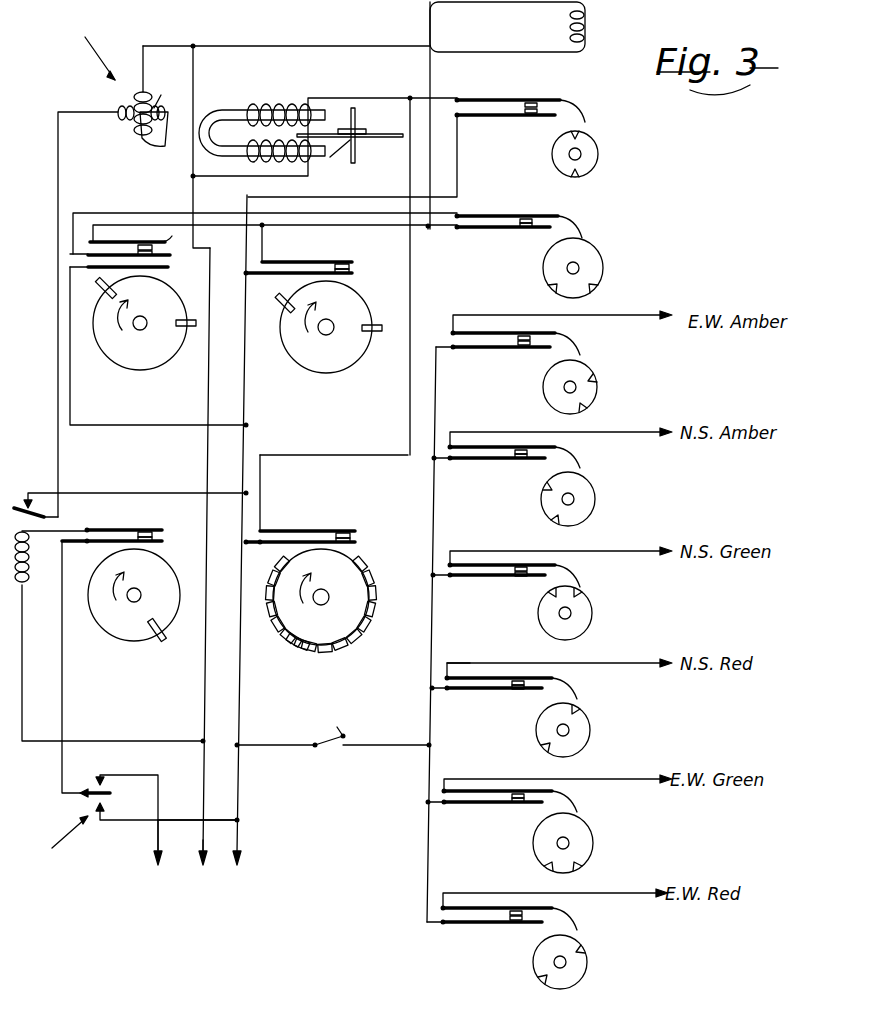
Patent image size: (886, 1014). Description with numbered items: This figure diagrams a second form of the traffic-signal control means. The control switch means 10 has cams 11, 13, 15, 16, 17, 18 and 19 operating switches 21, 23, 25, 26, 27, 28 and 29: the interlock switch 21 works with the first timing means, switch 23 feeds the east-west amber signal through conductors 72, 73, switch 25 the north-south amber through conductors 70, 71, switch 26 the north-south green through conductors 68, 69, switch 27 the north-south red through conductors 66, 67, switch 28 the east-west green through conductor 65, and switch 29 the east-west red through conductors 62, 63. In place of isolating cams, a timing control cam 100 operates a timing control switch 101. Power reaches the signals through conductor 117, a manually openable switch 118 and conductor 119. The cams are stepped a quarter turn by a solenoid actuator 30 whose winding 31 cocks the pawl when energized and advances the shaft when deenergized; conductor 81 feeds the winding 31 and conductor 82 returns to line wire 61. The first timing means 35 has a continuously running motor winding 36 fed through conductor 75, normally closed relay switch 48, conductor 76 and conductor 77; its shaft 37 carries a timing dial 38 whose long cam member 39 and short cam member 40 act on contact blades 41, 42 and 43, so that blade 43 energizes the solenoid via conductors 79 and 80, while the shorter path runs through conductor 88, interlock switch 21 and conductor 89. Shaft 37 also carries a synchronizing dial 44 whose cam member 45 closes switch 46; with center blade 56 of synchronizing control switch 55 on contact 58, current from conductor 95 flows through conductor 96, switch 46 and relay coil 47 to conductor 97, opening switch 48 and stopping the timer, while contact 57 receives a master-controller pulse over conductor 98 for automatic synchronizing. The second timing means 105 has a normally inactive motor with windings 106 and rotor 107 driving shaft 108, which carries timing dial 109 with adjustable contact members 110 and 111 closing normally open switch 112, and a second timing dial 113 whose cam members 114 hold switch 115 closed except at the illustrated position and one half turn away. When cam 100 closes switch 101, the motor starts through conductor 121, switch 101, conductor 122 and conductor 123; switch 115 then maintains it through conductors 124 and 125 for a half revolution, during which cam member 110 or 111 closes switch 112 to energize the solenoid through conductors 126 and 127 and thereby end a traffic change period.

The control switch means 10 is at (601, 153).
The cam 11 is at (580, 255).
The cam 13 is at (585, 378).
The cam 15 is at (585, 489).
The cam 16 is at (587, 620).
The cam 17 is at (580, 734).
The cam 18 is at (580, 835).
The cam 19 is at (582, 966).
The interlock switch 21 is at (552, 212).
The switch 23 is at (552, 333).
The switch 25 is at (554, 452).
The switch 26 is at (554, 569).
The switch 27 is at (542, 683).
The switch 28 is at (555, 796).
The switch 29 is at (555, 912).
The solenoid actuator 30 is at (599, 36).
The solenoid winding 31 is at (570, 38).
The first timing means 35 is at (87, 46).
The motor windings 36 is at (145, 107).
The shaft 37 is at (137, 332).
The timing dial 38 is at (151, 362).
The cam member 39 is at (95, 291).
The cam member 40 is at (193, 328).
The contact blade 41 is at (168, 269).
The contact blade 42 is at (170, 257).
The contact blade 43 is at (160, 240).
The synchronizing dial 44 is at (158, 674).
The cam member 45 is at (166, 646).
The synchronizing switch 46 is at (158, 529).
The relay coil 47 is at (30, 574).
The normally closed switch 48 is at (30, 494).
The synchronizing control switch 55 is at (56, 839).
The switch blade 56 is at (90, 800).
The contact 57 is at (108, 785).
The contact 58 is at (108, 806).
The line wire 61 is at (200, 838).
The conductor 62 is at (436, 926).
The conductor 63 is at (493, 892).
The conductor 65 is at (504, 756).
The conductor 66 is at (436, 694).
The conductor 67 is at (475, 645).
The wire 68 is at (437, 580).
The wire 69 is at (496, 550).
The conductor 70 is at (438, 462).
The conductor 71 is at (492, 431).
The conductor 72 is at (440, 352).
The conductor 73 is at (492, 314).
The conductor 75 is at (134, 492).
The conductor 76 is at (57, 373).
The conductor 77 is at (157, 44).
The conductor 79 is at (99, 427).
The conductor 80 is at (219, 553).
The conductor 81 is at (432, 72).
The conductor 82 is at (341, 45).
The conductor 88 is at (120, 213).
The conductor 89 is at (438, 228).
The conductor 95 is at (174, 819).
The conductor 96 is at (64, 700).
The conductor 97 is at (25, 698).
The conductor 98 is at (156, 848).
The timing control cam 100 is at (552, 155).
The timing control switch 101 is at (543, 98).
The second timing means 105 is at (305, 98).
The motor windings 106 is at (270, 104).
The rotor 107 is at (389, 133).
The shaft 108 is at (358, 154).
The timing dial 109 is at (354, 304).
The cam member 110 is at (282, 312).
The cam member 111 is at (378, 333).
The switch 112 is at (350, 262).
The second timing dial 113 is at (342, 597).
The cam members 114 is at (365, 574).
The switch 115 is at (350, 530).
The conductor 117 is at (283, 748).
The switch 118 is at (322, 724).
The conductor 119 is at (427, 727).
The conductor 121 is at (339, 196).
The conductor 122 is at (416, 96).
The conductor 123 is at (196, 180).
The conductor 124 is at (252, 546).
The conductor 125 is at (318, 456).
The conductor 126 is at (252, 276).
The conductor 127 is at (280, 246).